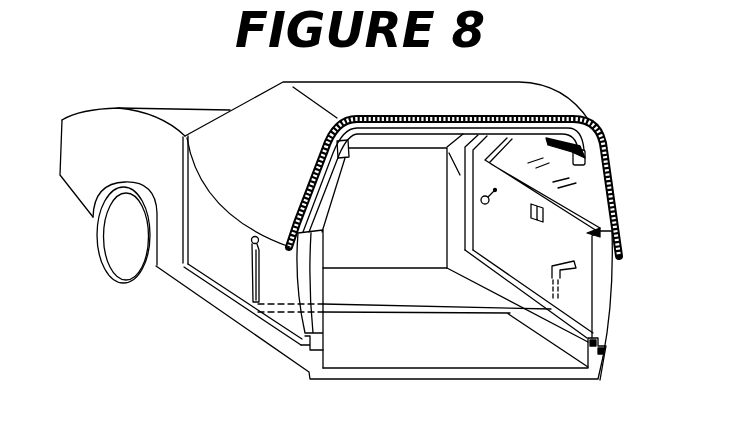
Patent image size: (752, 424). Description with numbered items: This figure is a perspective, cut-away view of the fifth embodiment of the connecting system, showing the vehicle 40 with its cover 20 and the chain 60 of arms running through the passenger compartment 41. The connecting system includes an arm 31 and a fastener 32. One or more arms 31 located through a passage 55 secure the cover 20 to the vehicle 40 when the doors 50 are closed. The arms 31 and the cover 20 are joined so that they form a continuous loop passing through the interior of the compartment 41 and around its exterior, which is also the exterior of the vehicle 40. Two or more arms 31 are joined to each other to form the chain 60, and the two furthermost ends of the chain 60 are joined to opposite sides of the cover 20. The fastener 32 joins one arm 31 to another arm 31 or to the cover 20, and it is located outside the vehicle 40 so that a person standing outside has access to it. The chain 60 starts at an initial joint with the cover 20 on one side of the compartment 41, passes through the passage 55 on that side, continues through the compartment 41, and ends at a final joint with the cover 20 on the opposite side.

The cover 20 is at (263, 128).
The vehicle 40 is at (122, 153).
The passage 55 is at (187, 193).
The compartment 41 is at (398, 195).
The doors 50 is at (232, 255).
The fastener 32 is at (254, 292).
The arm 31 is at (257, 307).
The chain 60 is at (442, 320).